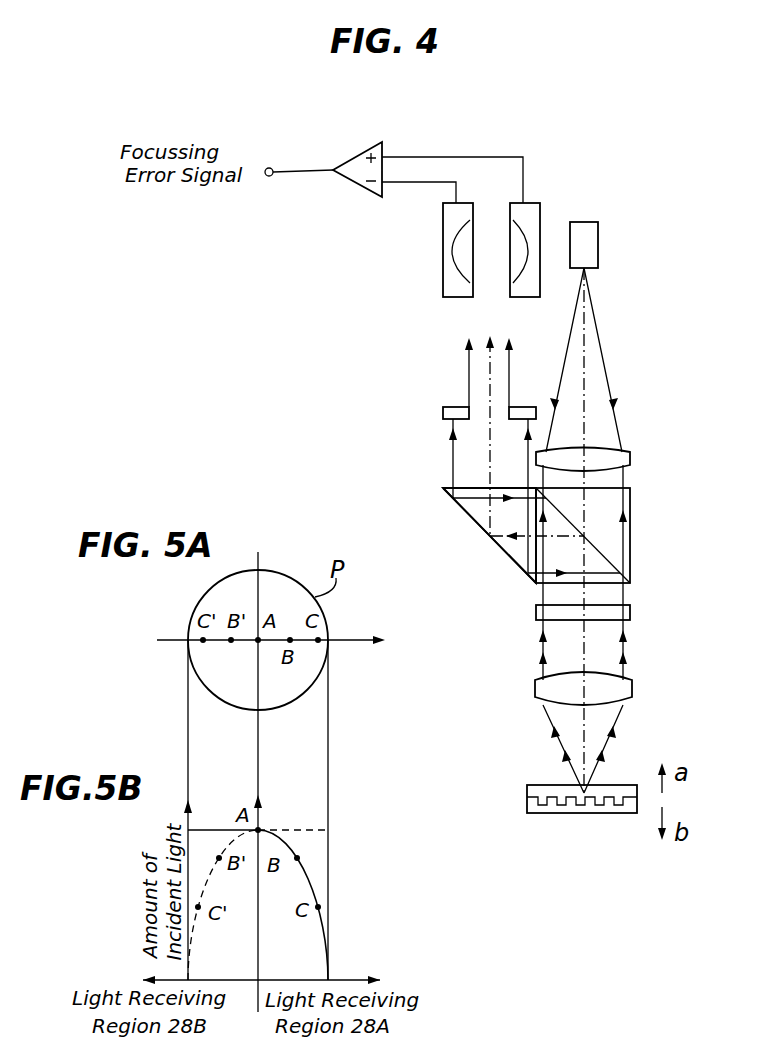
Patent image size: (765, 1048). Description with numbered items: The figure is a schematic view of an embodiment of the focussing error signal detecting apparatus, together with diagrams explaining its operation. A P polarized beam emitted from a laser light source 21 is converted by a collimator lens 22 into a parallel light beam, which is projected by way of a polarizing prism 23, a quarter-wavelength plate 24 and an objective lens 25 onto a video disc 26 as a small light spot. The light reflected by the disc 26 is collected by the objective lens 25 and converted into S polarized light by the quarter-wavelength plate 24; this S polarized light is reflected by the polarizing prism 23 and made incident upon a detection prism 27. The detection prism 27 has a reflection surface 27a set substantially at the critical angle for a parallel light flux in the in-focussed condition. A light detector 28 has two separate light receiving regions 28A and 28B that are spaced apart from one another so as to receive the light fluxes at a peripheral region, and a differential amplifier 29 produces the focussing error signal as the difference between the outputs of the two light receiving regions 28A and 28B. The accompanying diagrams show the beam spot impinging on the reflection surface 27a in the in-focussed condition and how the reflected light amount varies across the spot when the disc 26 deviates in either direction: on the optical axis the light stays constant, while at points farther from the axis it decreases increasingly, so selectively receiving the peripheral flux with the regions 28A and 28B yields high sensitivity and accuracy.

The laser light source 21 is at (592, 240).
The collimator lens 22 is at (628, 461).
The polarizing prism 23 is at (630, 533).
The quarter-wavelength plate 24 is at (628, 613).
The objective lens 25 is at (632, 685).
The video disc 26 is at (548, 786).
The detection prism 27 is at (475, 507).
The reflection surface 27a is at (504, 546).
The light detector 28 is at (437, 279).
The light receiving region 28A is at (530, 232).
The light receiving region 28B is at (453, 240).
The differential amplifier 29 is at (363, 152).